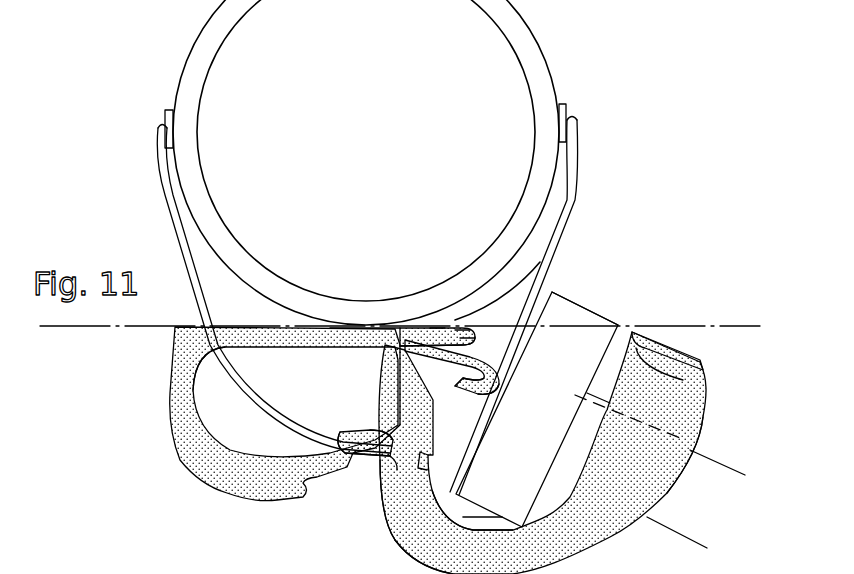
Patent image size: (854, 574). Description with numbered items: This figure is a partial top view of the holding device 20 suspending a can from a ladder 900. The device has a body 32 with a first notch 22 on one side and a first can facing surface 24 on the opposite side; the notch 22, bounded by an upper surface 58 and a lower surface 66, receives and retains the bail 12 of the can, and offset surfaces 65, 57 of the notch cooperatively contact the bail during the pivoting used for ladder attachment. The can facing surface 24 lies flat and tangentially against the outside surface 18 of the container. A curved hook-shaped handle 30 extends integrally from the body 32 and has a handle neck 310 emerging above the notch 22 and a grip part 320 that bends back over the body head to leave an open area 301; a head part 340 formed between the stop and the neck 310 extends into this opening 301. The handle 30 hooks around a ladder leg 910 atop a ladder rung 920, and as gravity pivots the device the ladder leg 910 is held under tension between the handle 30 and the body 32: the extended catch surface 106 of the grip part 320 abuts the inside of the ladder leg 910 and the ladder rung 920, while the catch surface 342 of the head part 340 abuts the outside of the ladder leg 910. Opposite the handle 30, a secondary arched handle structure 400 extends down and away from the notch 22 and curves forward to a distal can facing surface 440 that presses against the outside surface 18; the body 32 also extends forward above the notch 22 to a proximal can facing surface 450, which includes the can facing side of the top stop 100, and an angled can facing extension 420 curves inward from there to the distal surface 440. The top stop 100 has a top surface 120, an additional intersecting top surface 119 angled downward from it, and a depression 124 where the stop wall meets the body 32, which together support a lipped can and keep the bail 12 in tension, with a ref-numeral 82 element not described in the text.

The bail 12 is at (565, 225).
The outside surface 18 is at (517, 253).
The holding device 20 is at (688, 305).
The first notch 22 is at (343, 500).
The first can facing surface 24 is at (362, 323).
The curved handle 30 is at (707, 407).
The body 32 is at (467, 372).
The offset surface 57 is at (390, 443).
The upper surface 58 is at (397, 460).
The offset surface 65 is at (330, 437).
The lower surface 66 is at (340, 443).
The cord channel 82 is at (335, 437).
The top stop 100 is at (430, 327).
The catch surface 106 is at (530, 502).
The intersecting top surface 119 is at (470, 330).
The top surface 120 is at (458, 338).
The depression 124 is at (453, 345).
The open area 301 is at (482, 505).
The handle neck 310 is at (393, 517).
The grip part 320 is at (643, 492).
The head part 340 is at (410, 420).
The catch surface 342 is at (493, 390).
The arched handle structure 400 is at (193, 447).
The angled can facing extension 420 is at (303, 337).
The distal can facing surface 440 is at (193, 327).
The proximal can facing surface 450 is at (437, 327).
The ladder 900 is at (568, 293).
The ladder leg 910 is at (580, 313).
The ladder rung 920 is at (700, 465).